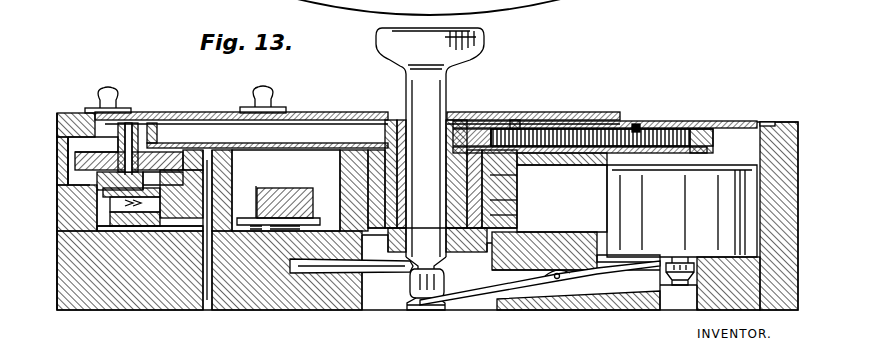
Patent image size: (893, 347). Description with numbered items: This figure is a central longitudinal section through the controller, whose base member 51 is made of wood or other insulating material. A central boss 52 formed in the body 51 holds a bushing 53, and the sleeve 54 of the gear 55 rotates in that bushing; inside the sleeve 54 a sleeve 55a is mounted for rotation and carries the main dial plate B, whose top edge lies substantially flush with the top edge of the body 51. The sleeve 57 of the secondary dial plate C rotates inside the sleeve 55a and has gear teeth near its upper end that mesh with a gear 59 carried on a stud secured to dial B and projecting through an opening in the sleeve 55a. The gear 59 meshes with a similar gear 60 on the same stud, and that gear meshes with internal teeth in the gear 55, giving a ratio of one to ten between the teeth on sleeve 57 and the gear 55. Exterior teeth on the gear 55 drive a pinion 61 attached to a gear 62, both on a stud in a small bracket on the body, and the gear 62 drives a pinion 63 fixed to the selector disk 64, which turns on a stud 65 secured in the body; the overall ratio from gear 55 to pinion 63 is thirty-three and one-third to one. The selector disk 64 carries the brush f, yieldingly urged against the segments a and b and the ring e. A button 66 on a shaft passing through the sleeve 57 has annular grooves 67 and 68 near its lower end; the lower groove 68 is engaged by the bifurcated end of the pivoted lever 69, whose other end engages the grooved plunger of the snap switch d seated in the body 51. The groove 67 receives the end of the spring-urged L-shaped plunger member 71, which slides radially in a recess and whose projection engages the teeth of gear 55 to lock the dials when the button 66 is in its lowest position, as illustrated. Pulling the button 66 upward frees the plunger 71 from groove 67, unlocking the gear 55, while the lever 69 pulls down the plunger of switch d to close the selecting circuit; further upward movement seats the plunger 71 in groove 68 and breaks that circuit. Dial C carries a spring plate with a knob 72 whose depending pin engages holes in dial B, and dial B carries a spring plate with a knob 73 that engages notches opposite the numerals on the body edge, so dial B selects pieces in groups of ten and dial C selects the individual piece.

The base member 51 is at (120, 298).
The central boss 52 is at (357, 172).
The bushing 53 is at (492, 178).
The sleeve 54 is at (492, 190).
The gear 55 is at (714, 150).
The sleeve 55a is at (495, 205).
The sleeve 57 is at (492, 219).
The gear 59 is at (476, 128).
The gear 60 is at (690, 131).
The pinion 61 is at (73, 113).
The gear 62 is at (56, 137).
The pinion 63 is at (233, 161).
The selector disk 64 is at (282, 201).
The stud 65 is at (211, 310).
The button 66 is at (400, 40).
The annular groove 67 is at (444, 270).
The annular groove 68 is at (407, 306).
The pivoted lever 69 is at (485, 296).
The L-shaped plunger member 71 is at (370, 276).
The knob 72 is at (273, 91).
The knob 73 is at (117, 91).
The main dial plate B is at (652, 121).
The secondary dial plate C is at (538, 121).
The segment a is at (108, 229).
The segment b is at (308, 229).
The switch d is at (682, 225).
The ring e is at (278, 197).
The brush f is at (100, 223).